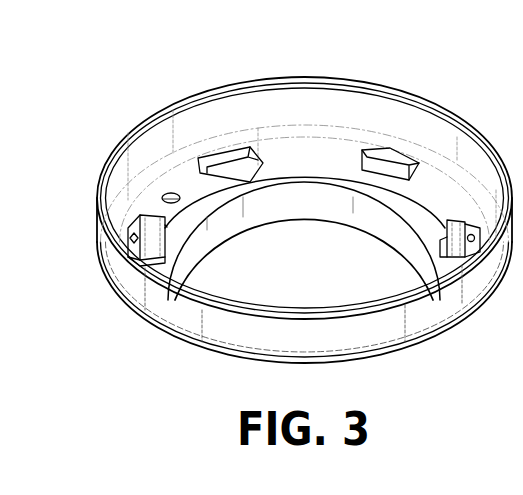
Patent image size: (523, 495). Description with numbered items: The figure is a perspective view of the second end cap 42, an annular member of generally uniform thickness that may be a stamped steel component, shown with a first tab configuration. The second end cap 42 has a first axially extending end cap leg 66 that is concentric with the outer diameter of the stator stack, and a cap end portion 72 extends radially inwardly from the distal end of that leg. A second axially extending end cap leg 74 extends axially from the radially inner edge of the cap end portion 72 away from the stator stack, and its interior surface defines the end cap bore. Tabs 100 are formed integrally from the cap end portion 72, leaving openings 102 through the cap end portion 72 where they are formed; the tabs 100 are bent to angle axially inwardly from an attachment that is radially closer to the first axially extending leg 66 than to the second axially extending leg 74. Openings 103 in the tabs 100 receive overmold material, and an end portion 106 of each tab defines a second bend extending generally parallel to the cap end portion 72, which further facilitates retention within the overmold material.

The second end cap 42 is at (308, 72).
The first axially extending end cap leg 66 is at (250, 108).
The cap end portion 72 is at (187, 170).
The second axially extending end cap leg 74 is at (300, 202).
The tabs 100 is at (139, 229).
The openings 102 is at (150, 258).
The openings 103 is at (132, 236).
The end portion 106 is at (165, 228).